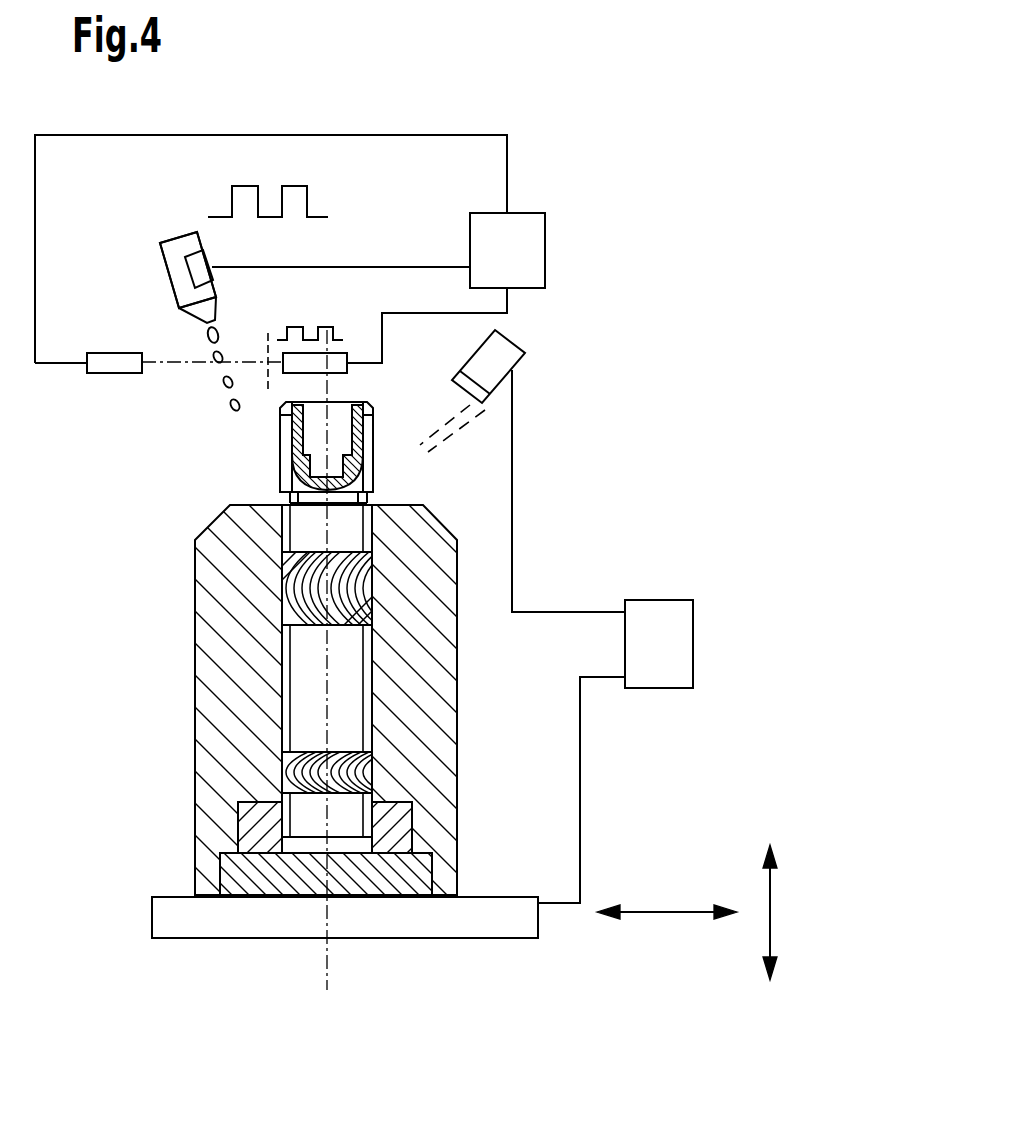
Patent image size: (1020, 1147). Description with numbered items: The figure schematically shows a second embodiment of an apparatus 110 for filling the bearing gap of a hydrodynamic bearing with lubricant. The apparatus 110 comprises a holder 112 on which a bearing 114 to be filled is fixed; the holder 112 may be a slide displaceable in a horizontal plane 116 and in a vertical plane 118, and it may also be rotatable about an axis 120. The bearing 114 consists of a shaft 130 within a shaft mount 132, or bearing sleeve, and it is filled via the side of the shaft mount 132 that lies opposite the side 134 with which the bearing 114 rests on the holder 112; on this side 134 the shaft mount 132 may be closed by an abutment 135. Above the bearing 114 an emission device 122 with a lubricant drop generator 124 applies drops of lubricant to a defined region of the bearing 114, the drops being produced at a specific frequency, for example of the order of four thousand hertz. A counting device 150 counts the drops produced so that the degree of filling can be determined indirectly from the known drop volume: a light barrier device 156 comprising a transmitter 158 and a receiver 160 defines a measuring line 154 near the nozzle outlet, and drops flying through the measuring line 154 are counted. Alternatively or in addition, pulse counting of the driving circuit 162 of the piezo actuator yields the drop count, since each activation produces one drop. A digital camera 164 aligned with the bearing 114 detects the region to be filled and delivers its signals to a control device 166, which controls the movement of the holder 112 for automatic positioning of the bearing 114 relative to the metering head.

The apparatus 110 is at (142, 728).
The holder 112 is at (247, 910).
The bearing 114 is at (222, 618).
The horizontal plane displacement 116 is at (663, 913).
The vertical plane displacement 118 is at (772, 912).
The axis 120 is at (330, 985).
The emission device 122 is at (180, 313).
The lubricant drop generator 124 is at (176, 266).
The shaft 130 is at (360, 683).
The shaft mount 132 is at (440, 652).
The side 134 is at (442, 883).
The abutment 135 is at (235, 872).
The counting device 150 is at (545, 250).
The measuring line 154 is at (187, 363).
The light barrier device 156 is at (105, 398).
The transmitter 158 is at (120, 365).
The receiver 160 is at (341, 360).
The driving circuit 162 is at (218, 282).
The digital camera 164 is at (507, 357).
The control device 166 is at (658, 612).